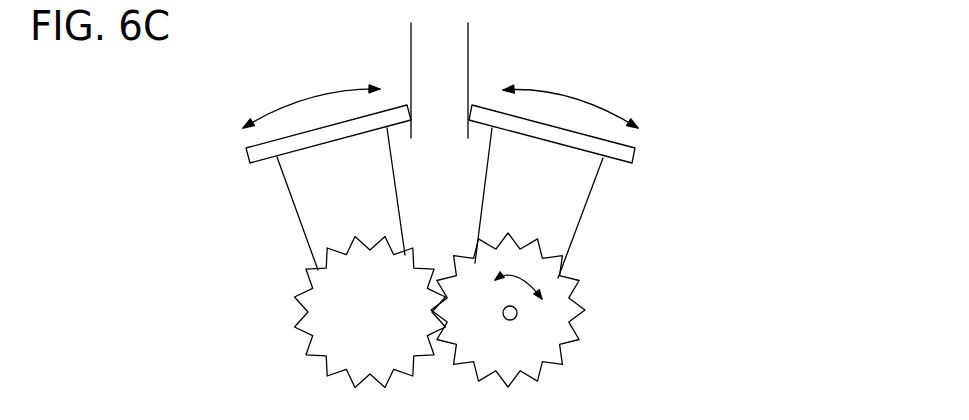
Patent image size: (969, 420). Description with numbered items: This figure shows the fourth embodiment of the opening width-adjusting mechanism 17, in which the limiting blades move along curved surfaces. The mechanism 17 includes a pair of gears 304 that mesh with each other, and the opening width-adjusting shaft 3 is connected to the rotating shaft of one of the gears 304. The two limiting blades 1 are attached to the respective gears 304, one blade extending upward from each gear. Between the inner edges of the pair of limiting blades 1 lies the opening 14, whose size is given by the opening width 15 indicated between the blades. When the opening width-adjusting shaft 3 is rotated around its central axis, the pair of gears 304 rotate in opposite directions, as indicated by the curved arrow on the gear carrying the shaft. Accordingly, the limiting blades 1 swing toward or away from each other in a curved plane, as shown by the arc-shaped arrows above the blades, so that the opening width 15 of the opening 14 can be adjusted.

The limiting blade 1 is at (258, 153).
The opening width-adjusting shaft 3 is at (517, 318).
The opening 14 is at (437, 108).
The opening width 15 is at (411, 33).
The opening width-adjusting mechanism 17 is at (678, 357).
The gear 304 is at (405, 252).